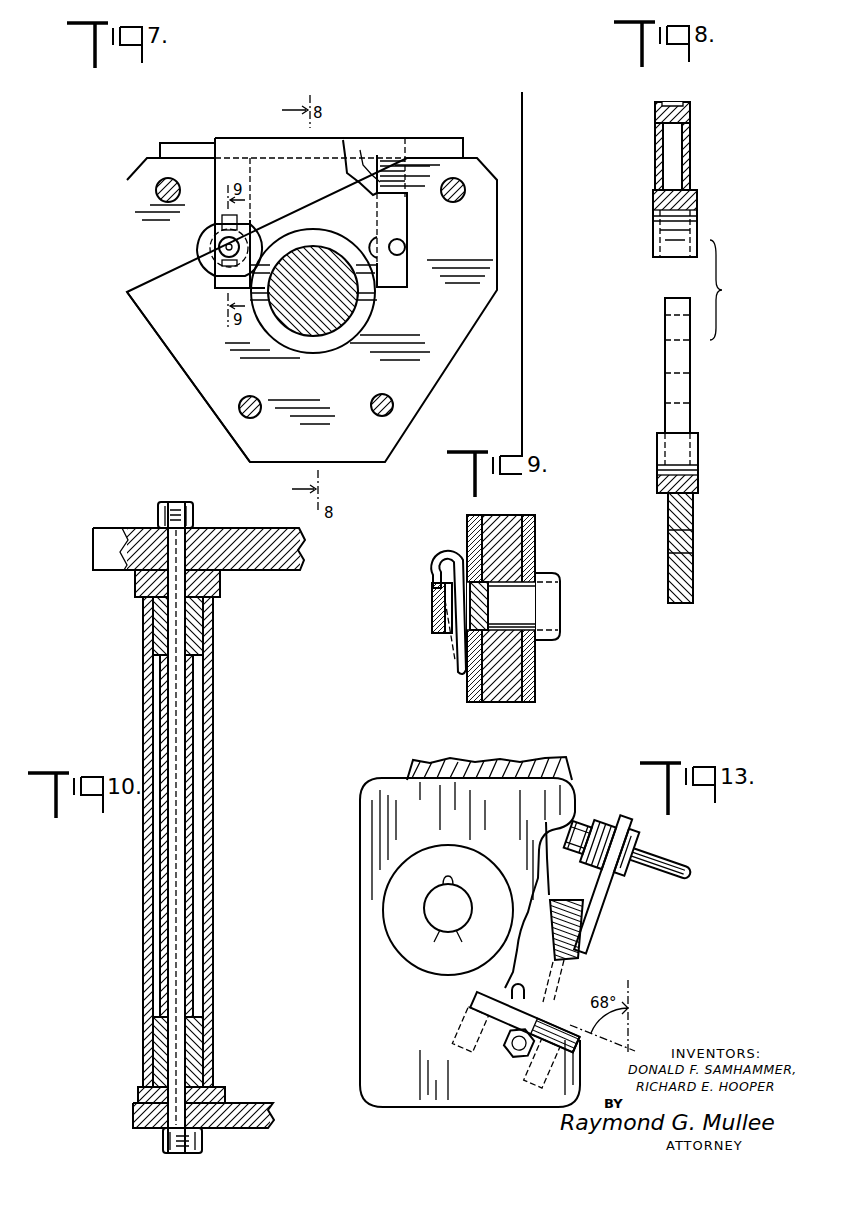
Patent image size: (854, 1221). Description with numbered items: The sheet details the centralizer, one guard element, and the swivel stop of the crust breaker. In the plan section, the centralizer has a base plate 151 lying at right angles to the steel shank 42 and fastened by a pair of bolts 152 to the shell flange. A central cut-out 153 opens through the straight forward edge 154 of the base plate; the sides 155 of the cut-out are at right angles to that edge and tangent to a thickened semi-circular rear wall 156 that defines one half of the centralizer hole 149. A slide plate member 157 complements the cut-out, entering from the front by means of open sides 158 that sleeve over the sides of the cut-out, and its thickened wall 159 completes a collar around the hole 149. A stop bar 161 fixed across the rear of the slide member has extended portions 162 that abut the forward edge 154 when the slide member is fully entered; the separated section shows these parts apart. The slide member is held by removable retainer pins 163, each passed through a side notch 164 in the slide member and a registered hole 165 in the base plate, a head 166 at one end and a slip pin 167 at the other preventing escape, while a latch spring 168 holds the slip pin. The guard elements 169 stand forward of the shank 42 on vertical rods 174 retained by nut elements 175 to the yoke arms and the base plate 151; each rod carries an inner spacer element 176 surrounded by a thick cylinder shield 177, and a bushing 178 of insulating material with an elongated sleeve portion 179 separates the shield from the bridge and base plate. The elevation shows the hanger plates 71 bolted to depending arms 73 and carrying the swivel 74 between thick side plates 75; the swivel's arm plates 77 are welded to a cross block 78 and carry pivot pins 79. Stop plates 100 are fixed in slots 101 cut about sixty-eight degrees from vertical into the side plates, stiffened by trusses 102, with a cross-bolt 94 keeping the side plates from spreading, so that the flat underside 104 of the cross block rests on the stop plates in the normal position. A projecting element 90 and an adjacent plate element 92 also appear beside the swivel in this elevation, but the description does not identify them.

In FIG. 7, the steel shank 42 is at (315, 317).
In FIG. 13, the hanger plates 71 is at (493, 764).
In FIG. 10, the depending arms 73 is at (93, 550).
In FIG. 13, the swivel 74 is at (551, 860).
In FIG. 13, the side plates 75 is at (433, 811).
In FIG. 13, the arm plates 77 is at (530, 986).
In FIG. 13, the cross block 78 is at (560, 930).
In FIG. 13, the pivot pins 79 is at (460, 890).
In FIG. 13, the rod 90 is at (683, 875).
In FIG. 13, the bar plate 92 is at (630, 810).
In FIG. 13, the cross-bolt 94 is at (513, 1057).
In FIG. 13, the stop plates 100 is at (583, 1046).
In FIG. 13, the slot 101 is at (478, 998).
In FIG. 13, the trusses 102 is at (462, 1033).
In FIG. 13, the flat underside 104 is at (519, 990).
In FIG. 7, the centralizer hole 149 is at (282, 328).
In FIG. 7, the base plate 151 is at (458, 307).
In FIG. 8, the base plate 151 is at (695, 522).
In FIG. 10, the base plate 151 is at (135, 1113).
In FIG. 7, the bolts 152 is at (250, 415).
In FIG. 7, the cut-out 153 is at (362, 168).
In FIG. 7, the straight forward edge 154 is at (177, 158).
In FIG. 7, the sides of the cut-out 155 is at (252, 173).
In FIG. 8, the sides of the cut-out 155 is at (665, 353).
In FIG. 7, the semi-circular rear wall 156 is at (360, 303).
In FIG. 8, the semi-circular rear wall 156 is at (700, 450).
In FIG. 7, the slide plate member 157 is at (348, 214).
In FIG. 8, the slide plate member 157 is at (690, 152).
In FIG. 8, the open sides 158 is at (673, 177).
In FIG. 7, the thickened wall 159 is at (293, 250).
In FIG. 8, the thickened wall 159 is at (698, 224).
In FIG. 7, the stop bar 161 is at (355, 148).
In FIG. 8, the stop bar 161 is at (680, 114).
In FIG. 7, the extended portions 162 is at (438, 147).
In FIG. 7, the retainer pins 163 is at (224, 250).
In FIG. 9, the retainer pins 163 is at (522, 617).
In FIG. 7, the side notch 164 is at (438, 216).
In FIG. 7, the hole 165 is at (405, 252).
In FIG. 9, the head 166 is at (560, 609).
In FIG. 9, the slip pin 167 is at (448, 650).
In FIG. 7, the latch spring 168 is at (205, 228).
In FIG. 9, the latch spring 168 is at (446, 603).
In FIG. 10, the guard elements 169 is at (218, 894).
In FIG. 10, the vertical rods 174 is at (178, 709).
In FIG. 10, the nut elements 175 is at (204, 1142).
In FIG. 10, the inner spacer element 176 is at (200, 810).
In FIG. 10, the cylinder shield 177 is at (143, 904).
In FIG. 10, the bushing 178 is at (140, 584).
In FIG. 10, the sleeve portion 179 is at (203, 626).